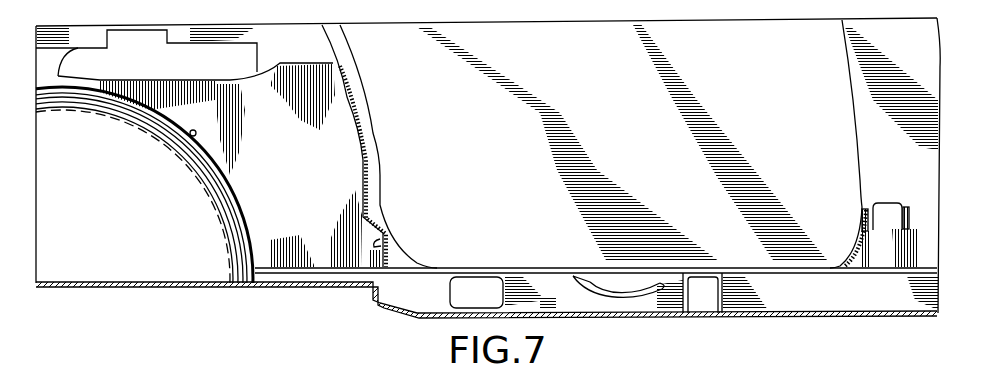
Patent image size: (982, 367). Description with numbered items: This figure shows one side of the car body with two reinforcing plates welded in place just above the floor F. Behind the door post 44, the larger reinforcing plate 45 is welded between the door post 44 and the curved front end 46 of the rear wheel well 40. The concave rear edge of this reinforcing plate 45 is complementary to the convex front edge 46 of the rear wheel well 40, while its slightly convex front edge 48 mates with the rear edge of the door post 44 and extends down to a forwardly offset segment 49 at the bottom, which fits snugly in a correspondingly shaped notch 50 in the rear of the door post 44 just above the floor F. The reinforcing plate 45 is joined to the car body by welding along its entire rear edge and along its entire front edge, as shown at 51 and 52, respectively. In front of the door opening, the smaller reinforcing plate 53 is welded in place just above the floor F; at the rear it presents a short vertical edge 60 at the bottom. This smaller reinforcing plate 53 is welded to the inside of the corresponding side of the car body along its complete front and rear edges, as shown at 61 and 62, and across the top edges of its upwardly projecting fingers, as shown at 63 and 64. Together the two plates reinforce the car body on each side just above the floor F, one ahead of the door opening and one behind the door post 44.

The rear wheel well 40 is at (113, 263).
The door post 44 is at (368, 135).
The reinforcing plate 45 is at (278, 186).
The curved front end of the rear wheel well 46 is at (193, 137).
The convex front edge 48 is at (347, 97).
The forwardly offset segment 49 is at (365, 263).
The notch 50 is at (382, 243).
The weld along rear edge 51 is at (245, 220).
The weld along front edge 52 is at (363, 168).
The smaller reinforcing plate 53 is at (890, 258).
The short vertical edge 60 is at (843, 265).
The weld along front edge 61 is at (913, 228).
The weld along rear edge 62 is at (860, 230).
The weld across top edge of finger 63 is at (865, 207).
The weld across top edge of finger 64 is at (908, 207).
The floor F is at (483, 268).